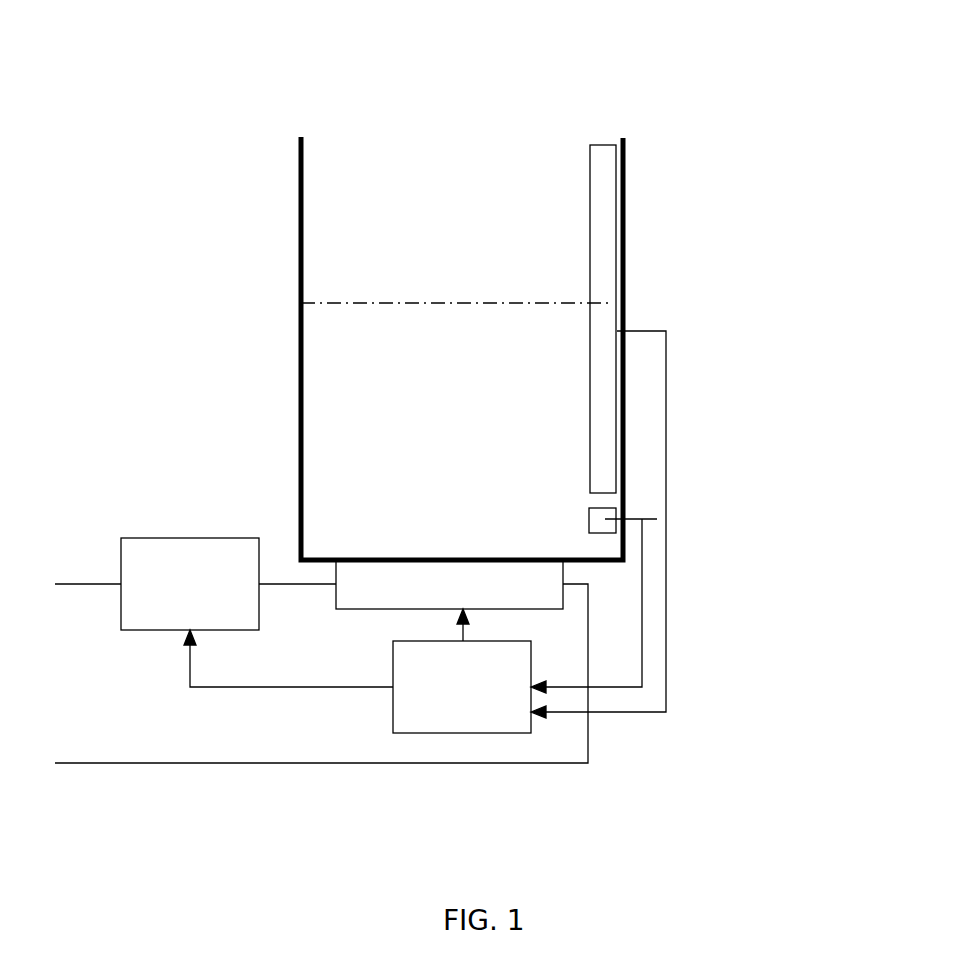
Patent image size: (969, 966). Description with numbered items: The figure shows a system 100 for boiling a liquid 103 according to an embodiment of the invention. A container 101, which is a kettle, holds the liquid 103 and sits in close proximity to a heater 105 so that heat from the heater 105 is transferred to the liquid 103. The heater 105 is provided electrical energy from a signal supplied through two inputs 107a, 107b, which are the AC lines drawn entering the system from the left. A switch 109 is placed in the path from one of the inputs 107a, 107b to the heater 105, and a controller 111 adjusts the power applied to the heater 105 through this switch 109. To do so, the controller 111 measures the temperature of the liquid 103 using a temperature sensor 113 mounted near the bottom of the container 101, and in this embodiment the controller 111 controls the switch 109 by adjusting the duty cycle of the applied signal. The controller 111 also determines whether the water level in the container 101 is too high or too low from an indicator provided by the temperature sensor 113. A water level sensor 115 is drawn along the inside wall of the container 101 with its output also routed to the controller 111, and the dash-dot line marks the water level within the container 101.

The system 100 is at (238, 46).
The container 101 is at (361, 124).
The liquid 103 is at (336, 393).
The heater 105 is at (376, 610).
The input 107a is at (63, 584).
The input 107b is at (64, 763).
The switch 109 is at (163, 538).
The controller 111 is at (393, 705).
The temperature sensor 113 is at (628, 519).
The water level sensor 115 is at (596, 145).